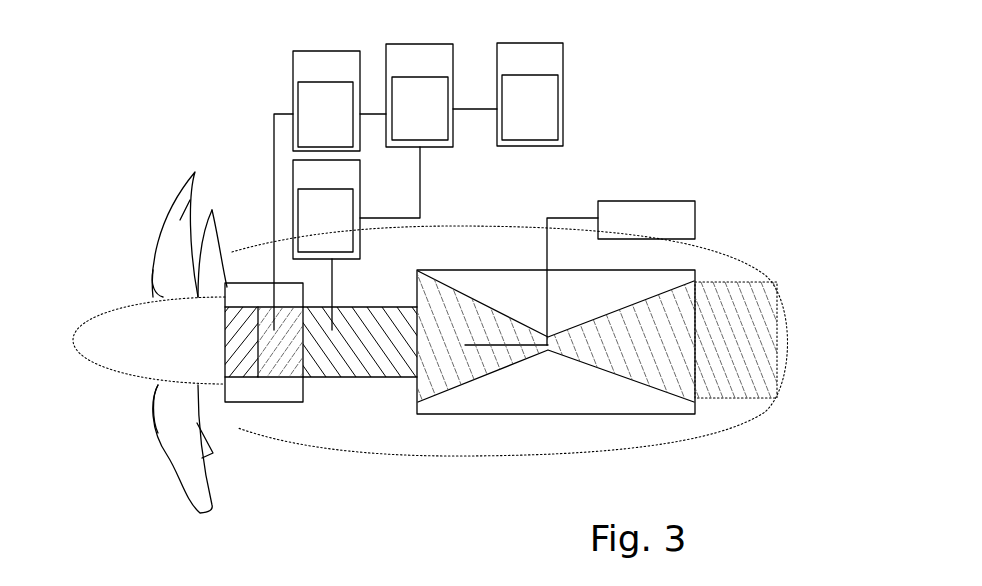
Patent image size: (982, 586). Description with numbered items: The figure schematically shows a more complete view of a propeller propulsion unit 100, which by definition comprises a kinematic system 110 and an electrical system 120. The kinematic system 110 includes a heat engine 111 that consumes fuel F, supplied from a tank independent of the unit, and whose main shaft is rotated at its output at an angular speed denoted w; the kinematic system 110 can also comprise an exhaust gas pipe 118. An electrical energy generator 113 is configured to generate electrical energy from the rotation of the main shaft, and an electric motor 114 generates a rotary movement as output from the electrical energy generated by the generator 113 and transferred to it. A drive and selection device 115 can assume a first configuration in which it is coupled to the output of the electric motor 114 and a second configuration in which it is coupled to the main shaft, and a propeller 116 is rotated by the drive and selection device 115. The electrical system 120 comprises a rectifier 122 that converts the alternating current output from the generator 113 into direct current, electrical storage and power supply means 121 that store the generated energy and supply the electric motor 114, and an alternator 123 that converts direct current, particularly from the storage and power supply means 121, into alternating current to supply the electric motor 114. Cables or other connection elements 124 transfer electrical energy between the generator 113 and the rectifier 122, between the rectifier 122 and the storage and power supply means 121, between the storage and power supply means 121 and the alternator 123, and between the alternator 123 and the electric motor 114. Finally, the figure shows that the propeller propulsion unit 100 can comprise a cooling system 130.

The propeller propulsion unit 100 is at (687, 107).
The kinematic system 110 is at (775, 236).
The heat engine 111 is at (628, 351).
The electrical energy generator 113 is at (339, 349).
The electric motor 114 is at (283, 323).
The drive and selection device 115 is at (247, 323).
The propeller 116 is at (131, 349).
The exhaust gas pipe 118 is at (718, 351).
The electrical system 120 is at (587, 114).
The electrical storage and power supply means 121 is at (511, 121).
The rectifier 122 is at (307, 226).
The alternator 123 is at (307, 123).
The cables or other connection elements 124 is at (401, 121).
The cooling system 130 is at (227, 282).